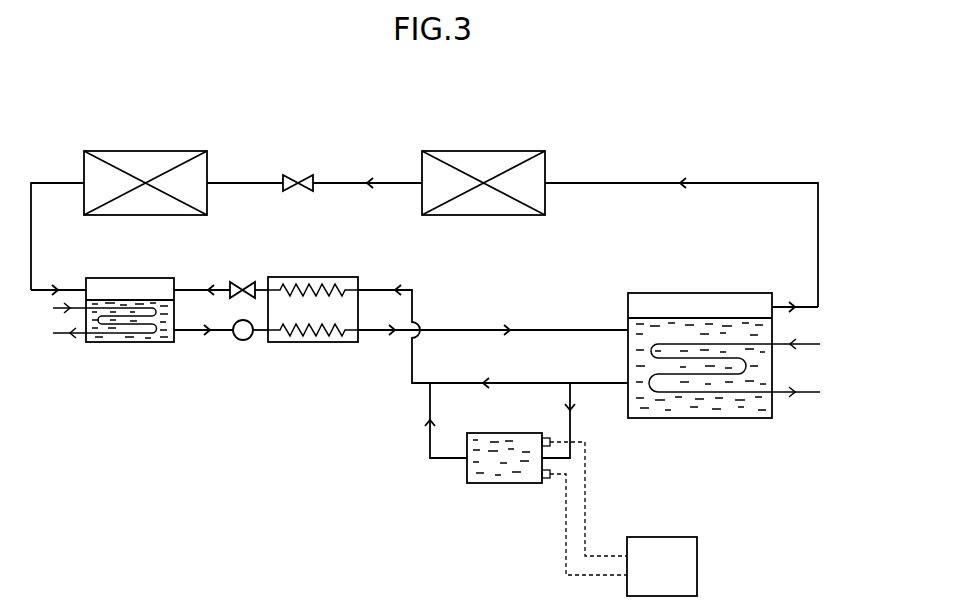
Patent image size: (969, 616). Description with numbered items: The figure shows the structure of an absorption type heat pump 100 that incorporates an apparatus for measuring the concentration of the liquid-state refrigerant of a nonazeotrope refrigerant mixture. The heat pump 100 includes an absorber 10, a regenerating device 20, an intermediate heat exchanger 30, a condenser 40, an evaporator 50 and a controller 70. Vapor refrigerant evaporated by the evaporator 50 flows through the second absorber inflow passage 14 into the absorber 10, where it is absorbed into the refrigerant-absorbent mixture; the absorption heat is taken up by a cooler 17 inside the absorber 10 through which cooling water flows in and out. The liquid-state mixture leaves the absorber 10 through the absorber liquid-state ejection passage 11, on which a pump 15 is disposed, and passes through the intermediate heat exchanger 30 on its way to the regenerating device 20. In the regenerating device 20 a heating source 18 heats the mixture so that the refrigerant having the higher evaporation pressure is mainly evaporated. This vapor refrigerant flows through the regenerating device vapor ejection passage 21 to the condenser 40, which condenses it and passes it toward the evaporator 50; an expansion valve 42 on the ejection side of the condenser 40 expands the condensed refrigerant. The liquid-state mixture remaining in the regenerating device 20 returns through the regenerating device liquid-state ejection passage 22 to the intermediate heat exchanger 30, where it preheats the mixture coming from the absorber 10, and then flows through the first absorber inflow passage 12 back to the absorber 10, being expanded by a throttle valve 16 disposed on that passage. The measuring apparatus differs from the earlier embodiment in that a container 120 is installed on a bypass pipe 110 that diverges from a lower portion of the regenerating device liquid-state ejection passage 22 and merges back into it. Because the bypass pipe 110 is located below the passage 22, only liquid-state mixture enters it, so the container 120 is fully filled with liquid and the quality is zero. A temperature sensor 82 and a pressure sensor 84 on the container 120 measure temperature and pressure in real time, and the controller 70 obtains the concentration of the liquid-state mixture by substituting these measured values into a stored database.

The absorption type heat pump 100 is at (651, 96).
The evaporator 50 is at (190, 150).
The condenser 40 is at (527, 151).
The expansion valve 42 is at (292, 175).
The absorber 10 is at (155, 278).
The absorber liquid-state ejection passage 11 is at (197, 333).
The first absorber inflow passage 12 is at (193, 288).
The second absorber inflow passage 14 is at (46, 288).
The pump 15 is at (250, 340).
The throttle valve 16 is at (238, 283).
The cooler 17 is at (102, 338).
The intermediate heat exchanger 30 is at (340, 277).
The regenerating device 20 is at (753, 293).
The regenerating device vapor ejection passage 21 is at (819, 296).
The regenerating device liquid-state ejection passage 22 is at (605, 385).
The heating source 18 is at (808, 394).
The bypass pipe 110 is at (428, 437).
The container 120 is at (483, 484).
The temperature sensor 82 is at (545, 432).
The pressure sensor 84 is at (545, 484).
The controller 70 is at (697, 566).